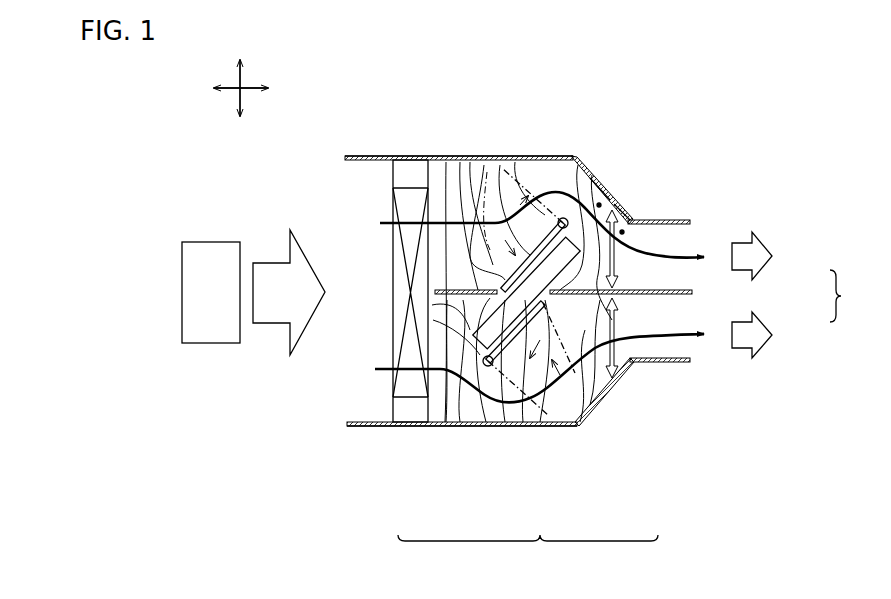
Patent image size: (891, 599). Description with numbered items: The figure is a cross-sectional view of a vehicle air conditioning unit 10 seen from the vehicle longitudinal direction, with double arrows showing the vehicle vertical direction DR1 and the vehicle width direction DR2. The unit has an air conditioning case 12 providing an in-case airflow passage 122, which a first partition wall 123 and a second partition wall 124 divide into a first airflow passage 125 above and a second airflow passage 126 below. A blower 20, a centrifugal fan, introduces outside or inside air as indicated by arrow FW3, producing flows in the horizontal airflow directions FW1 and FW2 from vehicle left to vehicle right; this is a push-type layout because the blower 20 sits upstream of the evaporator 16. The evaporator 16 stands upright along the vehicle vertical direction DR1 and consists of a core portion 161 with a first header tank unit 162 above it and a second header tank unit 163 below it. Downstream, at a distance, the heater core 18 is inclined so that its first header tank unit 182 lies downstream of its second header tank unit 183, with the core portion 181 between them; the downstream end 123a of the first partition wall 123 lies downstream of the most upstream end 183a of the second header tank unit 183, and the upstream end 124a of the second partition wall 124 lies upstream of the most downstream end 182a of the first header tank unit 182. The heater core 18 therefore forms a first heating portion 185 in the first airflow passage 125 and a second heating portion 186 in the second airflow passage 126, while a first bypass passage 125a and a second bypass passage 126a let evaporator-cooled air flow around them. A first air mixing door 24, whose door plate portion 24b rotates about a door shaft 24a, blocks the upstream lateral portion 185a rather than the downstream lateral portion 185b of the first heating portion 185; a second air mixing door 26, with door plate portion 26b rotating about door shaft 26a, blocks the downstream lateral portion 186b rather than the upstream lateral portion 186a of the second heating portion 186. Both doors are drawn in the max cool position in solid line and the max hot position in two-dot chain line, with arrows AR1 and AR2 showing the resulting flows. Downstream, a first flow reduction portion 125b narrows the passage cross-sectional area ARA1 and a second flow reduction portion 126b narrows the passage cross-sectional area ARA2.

The vehicle air conditioning unit 10 is at (732, 132).
The air conditioning case 12 is at (557, 154).
The evaporator 16 is at (389, 247).
The core portion 161 is at (398, 268).
The first header tank unit 162 is at (403, 173).
The second header tank unit 163 is at (398, 426).
The heater core 18 is at (528, 549).
The core portion 181 is at (433, 320).
The first header tank unit 182 is at (588, 178).
The most downstream end 182a is at (598, 200).
The second header tank unit 183 is at (498, 426).
The most upstream end 183a is at (480, 430).
The first heating portion 185 is at (588, 424).
The upstream lateral portion 185a is at (547, 178).
The downstream lateral portion 185b is at (601, 205).
The second heating portion 186 is at (433, 427).
The upstream lateral portion 186a is at (432, 305).
The downstream lateral portion 186b is at (555, 426).
The blower 20 is at (220, 248).
The first air mixing door 24 is at (530, 181).
The door shaft 24a is at (568, 176).
The door plate portion 24b is at (526, 178).
The second air mixing door 26 is at (532, 426).
The door shaft 26a is at (520, 426).
The door plate portion 26b is at (578, 426).
The in-case airflow passage 122 is at (848, 296).
The first partition wall 123 is at (452, 180).
The downstream end 123a is at (462, 178).
The second partition wall 124 is at (667, 296).
The upstream end 124a is at (480, 178).
The first airflow passage 125 is at (680, 279).
The first bypass passage 125a is at (630, 202).
The first flow reduction portion 125b is at (624, 231).
The second airflow passage 126 is at (680, 316).
The second bypass passage 126a is at (450, 426).
The second flow reduction portion 126b is at (604, 408).
The air flow AR1 is at (690, 252).
The air flow AR2 is at (688, 340).
The passage cross-sectional area ARA1 is at (618, 215).
The passage cross-sectional area ARA2 is at (616, 382).
The airflow direction FW1 is at (740, 240).
The airflow direction FW2 is at (742, 362).
The arrow FW3 is at (268, 324).
The vehicle vertical direction DR1 is at (248, 78).
The vehicle width direction DR2 is at (256, 90).